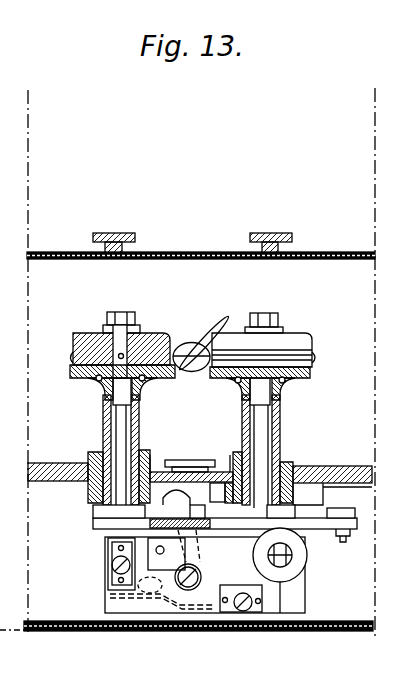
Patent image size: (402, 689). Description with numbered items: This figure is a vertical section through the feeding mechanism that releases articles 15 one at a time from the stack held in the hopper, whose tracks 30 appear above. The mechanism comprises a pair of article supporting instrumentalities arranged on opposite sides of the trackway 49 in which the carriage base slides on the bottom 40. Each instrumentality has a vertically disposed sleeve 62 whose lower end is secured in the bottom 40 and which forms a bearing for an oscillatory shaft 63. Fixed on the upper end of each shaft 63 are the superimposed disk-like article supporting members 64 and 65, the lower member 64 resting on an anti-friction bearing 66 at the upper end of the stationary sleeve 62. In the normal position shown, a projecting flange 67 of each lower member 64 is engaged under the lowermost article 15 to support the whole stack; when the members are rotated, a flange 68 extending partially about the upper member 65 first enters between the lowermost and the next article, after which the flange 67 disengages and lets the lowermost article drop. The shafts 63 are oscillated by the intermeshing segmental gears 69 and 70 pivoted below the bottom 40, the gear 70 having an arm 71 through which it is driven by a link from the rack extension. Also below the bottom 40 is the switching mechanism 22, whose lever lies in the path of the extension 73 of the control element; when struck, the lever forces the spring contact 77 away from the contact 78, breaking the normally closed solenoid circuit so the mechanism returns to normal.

The tracks 30 is at (248, 233).
The upper article supporting member 65 is at (83, 333).
The flange 68 is at (73, 358).
The articles 15 is at (192, 352).
The projecting flange 67 is at (216, 332).
The lower article supporting member 64 is at (82, 372).
The anti-friction bearing 66 is at (233, 383).
The oscillatory shaft 63 is at (122, 423).
The sleeve 62 is at (103, 450).
The trackway 49 is at (186, 460).
The bottom 40 is at (313, 470).
The segmental gear 69 is at (113, 522).
The contact 78 is at (112, 581).
The extension 73 is at (200, 530).
The segmental gear 70 is at (267, 555).
The arm 71 is at (311, 532).
The spring contact 77 is at (160, 615).
The switching mechanism 22 is at (208, 602).